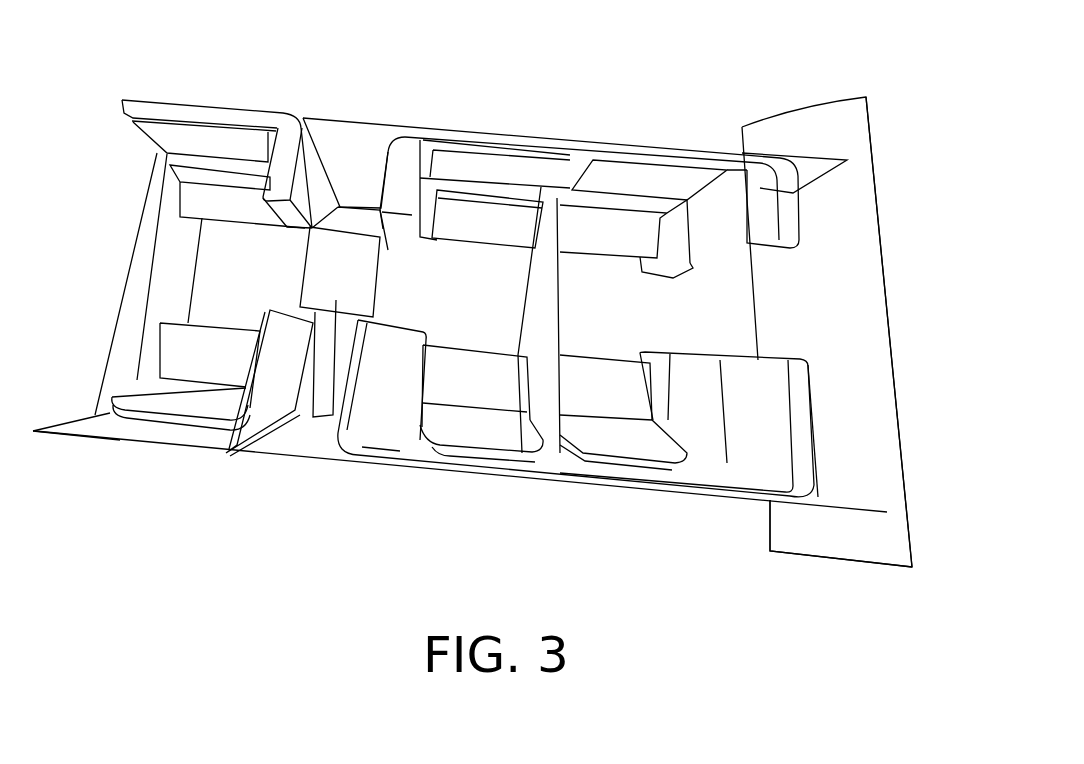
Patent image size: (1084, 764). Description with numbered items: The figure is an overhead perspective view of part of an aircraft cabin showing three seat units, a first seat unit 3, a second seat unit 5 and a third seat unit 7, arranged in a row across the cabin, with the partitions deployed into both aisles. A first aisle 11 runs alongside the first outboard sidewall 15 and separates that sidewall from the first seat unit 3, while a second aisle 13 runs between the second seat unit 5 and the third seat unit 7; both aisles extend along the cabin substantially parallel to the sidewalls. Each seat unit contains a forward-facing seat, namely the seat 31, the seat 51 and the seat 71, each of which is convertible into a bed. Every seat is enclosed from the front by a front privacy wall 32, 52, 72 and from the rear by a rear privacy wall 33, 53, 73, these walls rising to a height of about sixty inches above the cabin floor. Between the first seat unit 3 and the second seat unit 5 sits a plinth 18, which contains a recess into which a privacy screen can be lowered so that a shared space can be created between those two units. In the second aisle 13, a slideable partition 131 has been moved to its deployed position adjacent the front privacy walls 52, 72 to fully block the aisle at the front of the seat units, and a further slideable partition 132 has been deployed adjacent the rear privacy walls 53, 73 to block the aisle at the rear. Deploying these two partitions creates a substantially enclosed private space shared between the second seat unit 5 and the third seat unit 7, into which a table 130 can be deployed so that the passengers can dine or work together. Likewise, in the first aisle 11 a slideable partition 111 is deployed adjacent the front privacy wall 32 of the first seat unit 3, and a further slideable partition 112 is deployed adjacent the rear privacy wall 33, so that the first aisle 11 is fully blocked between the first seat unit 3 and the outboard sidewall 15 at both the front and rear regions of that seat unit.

The first seat unit 3 is at (670, 110).
The second seat unit 5 is at (482, 105).
The third seat unit 7 is at (201, 78).
The first aisle 11 is at (720, 297).
The second aisle 13 is at (358, 217).
The first outboard sidewall 15 is at (823, 313).
The plinth 18 is at (548, 305).
The seat 31 is at (607, 400).
The front privacy wall 32 is at (710, 148).
The rear privacy wall 33 is at (728, 495).
The seat 51 is at (467, 378).
The front privacy wall 52 is at (498, 133).
The rear privacy wall 53 is at (398, 463).
The seat 71 is at (197, 362).
The front privacy wall 72 is at (222, 105).
The rear privacy wall 73 is at (148, 443).
The slideable partition 111 is at (807, 173).
The slideable partition 112 is at (833, 500).
The table 130 is at (333, 283).
The slideable partition 131 is at (370, 143).
The slideable partition 132 is at (285, 433).